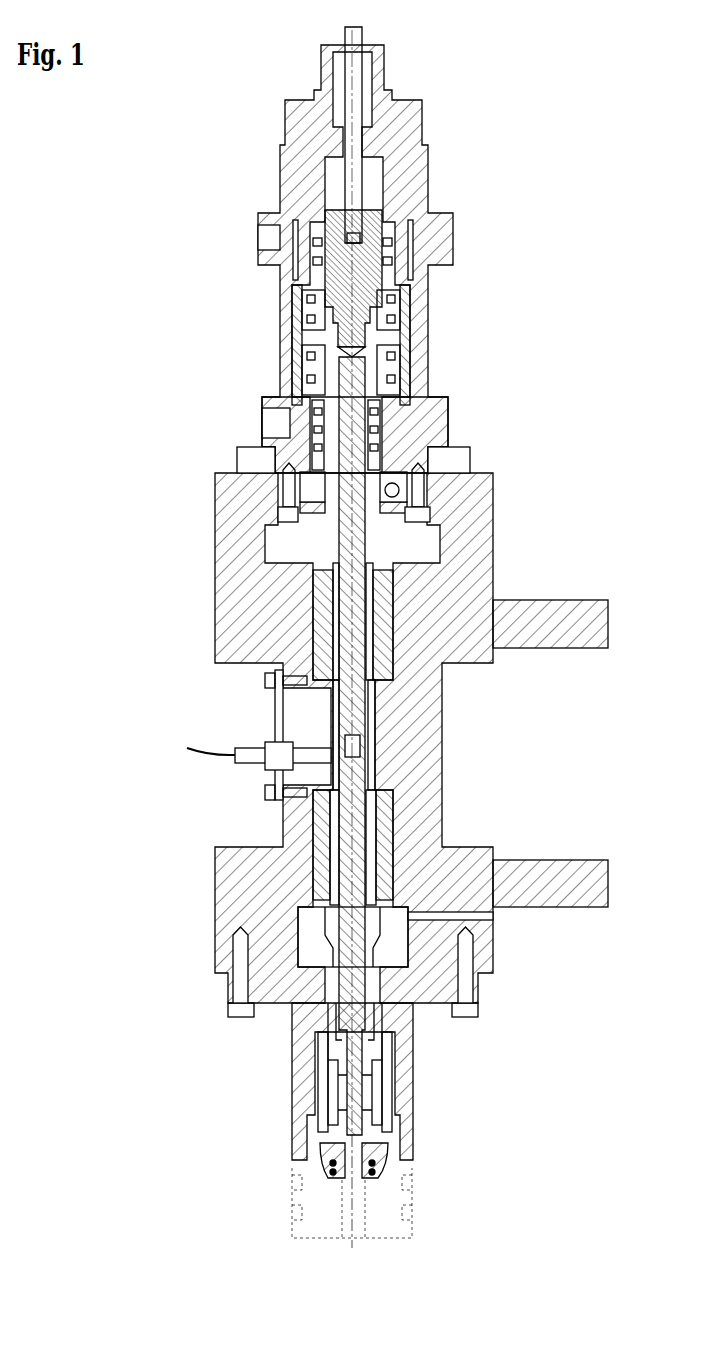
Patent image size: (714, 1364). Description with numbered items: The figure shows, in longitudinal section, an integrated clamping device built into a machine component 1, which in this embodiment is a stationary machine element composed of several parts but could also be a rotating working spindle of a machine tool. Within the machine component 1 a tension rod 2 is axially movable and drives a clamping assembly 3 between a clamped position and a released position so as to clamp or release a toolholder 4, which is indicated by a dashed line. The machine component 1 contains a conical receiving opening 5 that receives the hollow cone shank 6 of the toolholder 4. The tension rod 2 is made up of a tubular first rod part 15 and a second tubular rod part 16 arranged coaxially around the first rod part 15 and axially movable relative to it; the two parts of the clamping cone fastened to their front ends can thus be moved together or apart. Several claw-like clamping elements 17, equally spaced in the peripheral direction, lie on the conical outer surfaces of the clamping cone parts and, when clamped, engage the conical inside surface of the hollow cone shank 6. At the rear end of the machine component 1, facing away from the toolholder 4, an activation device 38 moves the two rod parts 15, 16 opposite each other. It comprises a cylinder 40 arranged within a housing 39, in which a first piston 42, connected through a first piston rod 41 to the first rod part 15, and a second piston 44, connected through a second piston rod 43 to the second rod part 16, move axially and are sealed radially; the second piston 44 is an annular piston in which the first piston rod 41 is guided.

The machine component 1 is at (528, 548).
The tension rod 2 is at (320, 945).
The clamping assembly 3 is at (400, 1080).
The toolholder 4 is at (383, 1198).
The conical receiving opening 5 is at (390, 1140).
The hollow cone shank 6 is at (305, 1143).
The first rod part 15 is at (347, 848).
The second rod part 16 is at (372, 837).
The clamping elements 17 is at (330, 1088).
The activation device 38 is at (458, 312).
The housing 39 is at (435, 430).
The cylinder 40 is at (405, 370).
The first piston rod 41 is at (363, 470).
The first piston 42 is at (322, 310).
The second piston rod 43 is at (327, 480).
The second piston 44 is at (322, 360).